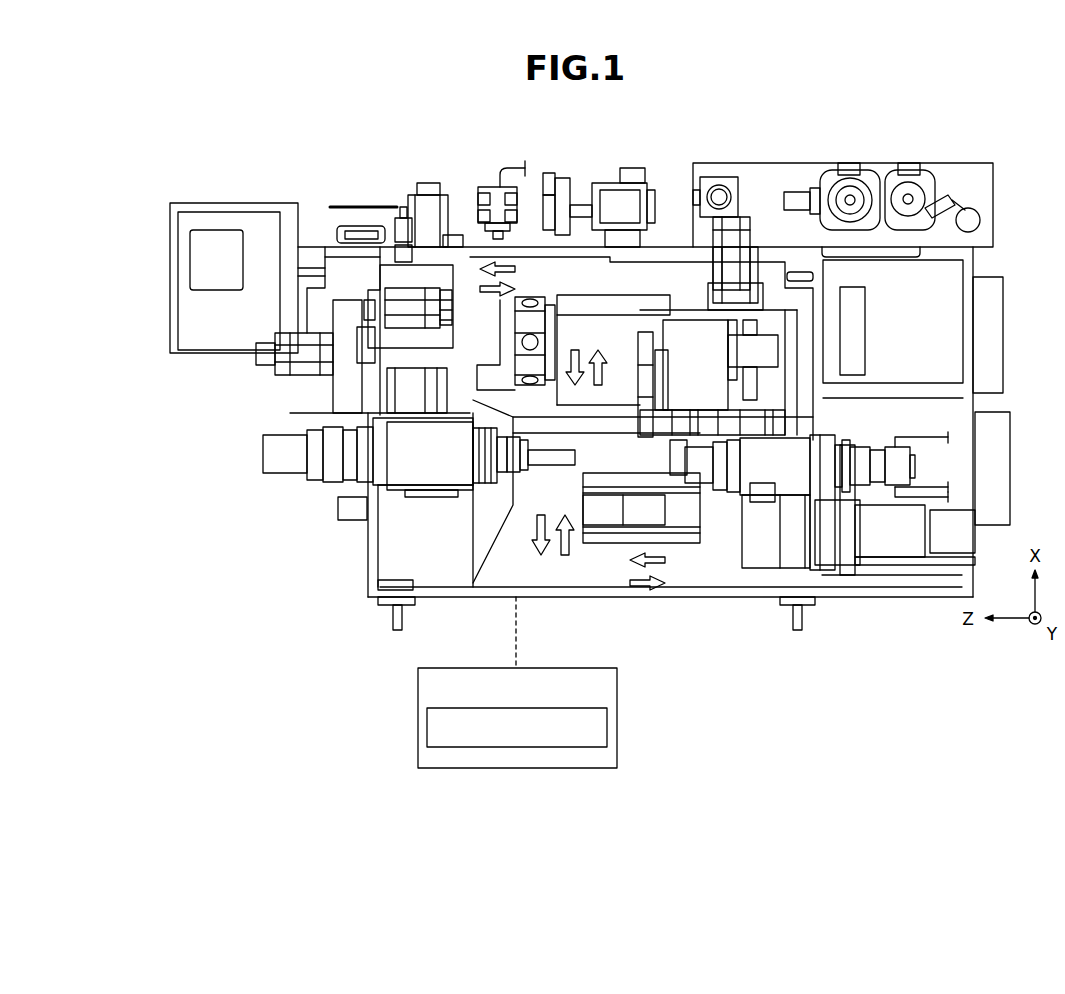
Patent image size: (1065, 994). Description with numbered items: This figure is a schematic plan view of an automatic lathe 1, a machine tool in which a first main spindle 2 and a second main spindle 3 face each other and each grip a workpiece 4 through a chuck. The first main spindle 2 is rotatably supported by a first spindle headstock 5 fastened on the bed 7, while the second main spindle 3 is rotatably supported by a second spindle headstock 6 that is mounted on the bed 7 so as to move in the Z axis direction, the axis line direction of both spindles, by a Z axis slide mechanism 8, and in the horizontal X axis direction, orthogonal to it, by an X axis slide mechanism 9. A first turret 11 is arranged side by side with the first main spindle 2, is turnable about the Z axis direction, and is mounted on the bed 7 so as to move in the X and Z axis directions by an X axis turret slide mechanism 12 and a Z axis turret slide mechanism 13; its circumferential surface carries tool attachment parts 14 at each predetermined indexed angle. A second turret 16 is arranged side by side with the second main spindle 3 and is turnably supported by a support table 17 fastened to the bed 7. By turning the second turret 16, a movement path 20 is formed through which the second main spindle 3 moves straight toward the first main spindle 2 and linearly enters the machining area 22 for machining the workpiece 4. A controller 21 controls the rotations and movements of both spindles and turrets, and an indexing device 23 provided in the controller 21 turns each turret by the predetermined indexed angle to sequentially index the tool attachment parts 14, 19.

The automatic lathe 1 is at (967, 148).
The first main spindle 2 is at (513, 470).
The second main spindle 3 is at (700, 477).
The workpiece 4 is at (548, 458).
The first spindle headstock 5 is at (400, 470).
The second spindle headstock 6 is at (783, 483).
The bed 7 is at (405, 557).
The Z axis slide mechanism 8 is at (757, 530).
The X axis slide mechanism 9 is at (812, 417).
The first turret 11 is at (543, 290).
The X axis turret slide mechanism 12 is at (433, 275).
The Z axis turret slide mechanism 13 is at (355, 365).
The tool attachment parts 14 is at (523, 295).
The second turret 16 is at (653, 332).
The support table 17 is at (718, 340).
The tool attachment parts 19 is at (645, 326).
The movement path 20 is at (651, 455).
The controller 21 is at (468, 770).
The machining area 22 is at (689, 558).
The indexing device 23 is at (552, 748).